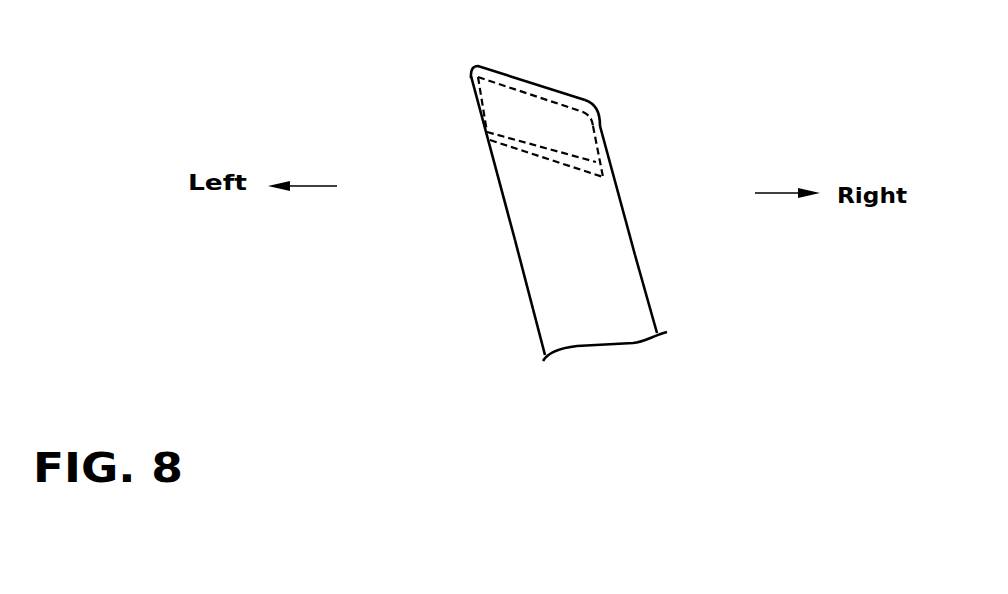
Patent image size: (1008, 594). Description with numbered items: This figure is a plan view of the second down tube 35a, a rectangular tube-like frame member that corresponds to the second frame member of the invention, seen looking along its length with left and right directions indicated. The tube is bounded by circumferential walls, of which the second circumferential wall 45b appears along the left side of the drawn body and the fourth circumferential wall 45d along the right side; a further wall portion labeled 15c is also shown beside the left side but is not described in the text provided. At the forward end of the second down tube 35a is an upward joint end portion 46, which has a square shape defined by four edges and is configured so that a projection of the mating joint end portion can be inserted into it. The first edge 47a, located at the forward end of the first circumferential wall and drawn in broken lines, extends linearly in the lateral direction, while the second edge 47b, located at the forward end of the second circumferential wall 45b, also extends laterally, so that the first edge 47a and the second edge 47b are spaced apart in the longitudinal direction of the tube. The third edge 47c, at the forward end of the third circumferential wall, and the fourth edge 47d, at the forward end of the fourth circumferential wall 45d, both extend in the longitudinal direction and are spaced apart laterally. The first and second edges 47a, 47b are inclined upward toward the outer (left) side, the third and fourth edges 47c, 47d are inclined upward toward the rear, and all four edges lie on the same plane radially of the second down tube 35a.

The side wall of chassis 15c is at (503, 202).
The second down tube 35a is at (633, 315).
The second circumferential wall 45b is at (545, 275).
The fourth circumferential wall 45d is at (627, 222).
The joint end portion 46 is at (580, 100).
The first edge 47a is at (542, 170).
The second edge 47b is at (508, 73).
The third edge 47c is at (482, 108).
The fourth edge 47d is at (598, 123).